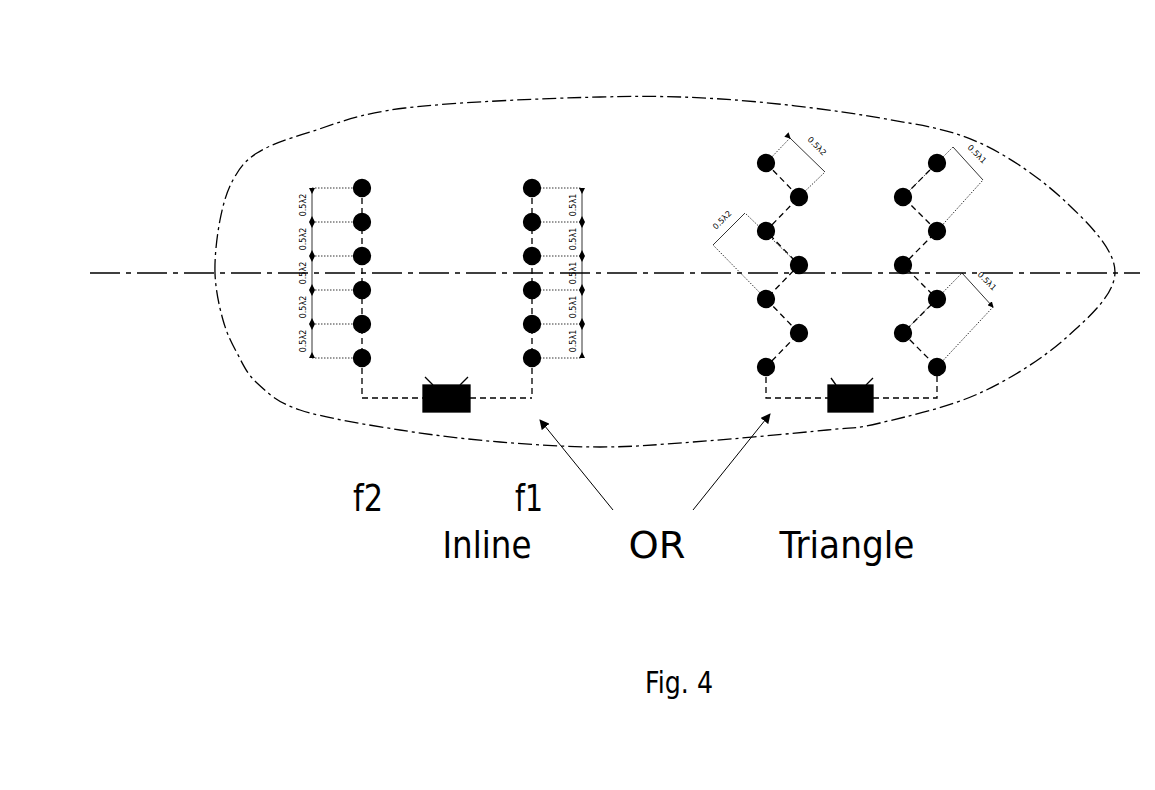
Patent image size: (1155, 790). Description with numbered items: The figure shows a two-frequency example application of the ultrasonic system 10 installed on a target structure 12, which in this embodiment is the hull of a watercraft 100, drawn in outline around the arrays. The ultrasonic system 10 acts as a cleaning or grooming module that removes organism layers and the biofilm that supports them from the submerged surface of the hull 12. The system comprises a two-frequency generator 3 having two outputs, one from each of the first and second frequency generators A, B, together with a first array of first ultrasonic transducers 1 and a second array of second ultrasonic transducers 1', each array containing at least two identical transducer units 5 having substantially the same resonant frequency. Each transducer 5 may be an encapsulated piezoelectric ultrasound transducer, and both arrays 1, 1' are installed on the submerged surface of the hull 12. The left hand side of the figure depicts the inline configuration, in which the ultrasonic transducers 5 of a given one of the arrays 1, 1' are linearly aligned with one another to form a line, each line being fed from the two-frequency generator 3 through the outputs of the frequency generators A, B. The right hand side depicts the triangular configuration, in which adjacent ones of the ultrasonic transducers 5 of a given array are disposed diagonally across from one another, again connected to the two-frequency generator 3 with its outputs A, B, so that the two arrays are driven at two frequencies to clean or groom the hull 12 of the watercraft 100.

The watercraft 100 is at (615, 244).
The target structure 12 is at (733, 100).
The ultrasonic system 10 is at (446, 190).
The ultrasound transducers 5 is at (366, 218).
The first array of first ultrasonic transducers 1 is at (649, 280).
The second array of second ultrasonic transducers 1' is at (506, 293).
The two-frequency generator 3 is at (840, 408).
The first frequency generator A is at (624, 363).
The second frequency generator B is at (675, 363).